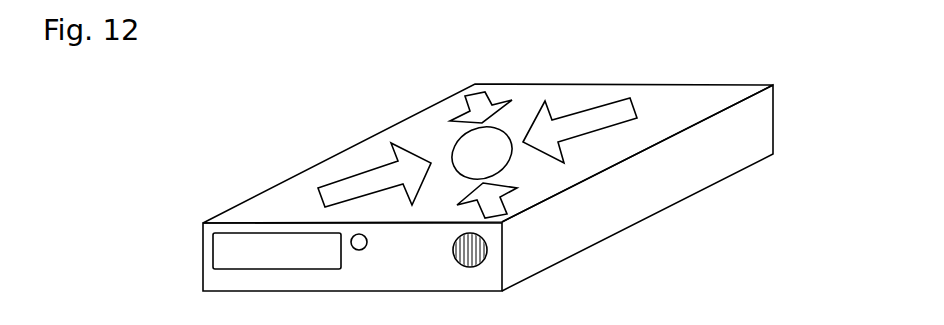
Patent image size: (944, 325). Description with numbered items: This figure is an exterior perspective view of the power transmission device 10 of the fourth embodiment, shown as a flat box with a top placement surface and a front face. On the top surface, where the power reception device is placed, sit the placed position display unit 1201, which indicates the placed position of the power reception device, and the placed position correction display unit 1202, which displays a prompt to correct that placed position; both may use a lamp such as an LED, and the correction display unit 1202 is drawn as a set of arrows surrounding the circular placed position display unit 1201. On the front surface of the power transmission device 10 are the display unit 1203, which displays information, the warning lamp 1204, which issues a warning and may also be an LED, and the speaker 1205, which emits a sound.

The power transmission device 10 is at (798, 122).
The placed position display unit 1201 is at (477, 142).
The placed position correction display unit 1202 is at (477, 98).
The display unit 1203 is at (237, 247).
The warning lamp 1204 is at (362, 250).
The speaker 1205 is at (472, 267).